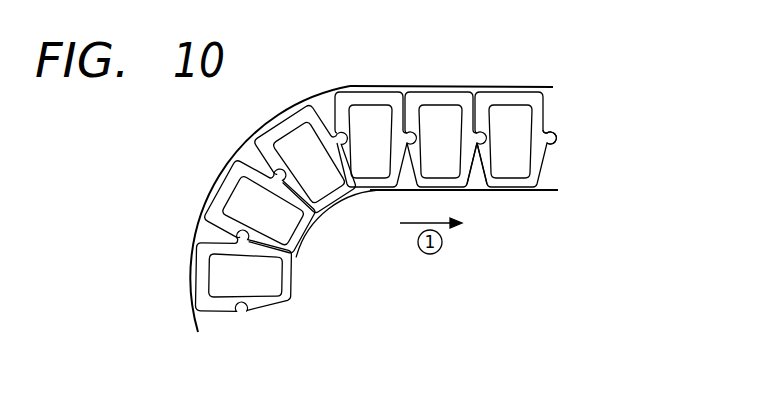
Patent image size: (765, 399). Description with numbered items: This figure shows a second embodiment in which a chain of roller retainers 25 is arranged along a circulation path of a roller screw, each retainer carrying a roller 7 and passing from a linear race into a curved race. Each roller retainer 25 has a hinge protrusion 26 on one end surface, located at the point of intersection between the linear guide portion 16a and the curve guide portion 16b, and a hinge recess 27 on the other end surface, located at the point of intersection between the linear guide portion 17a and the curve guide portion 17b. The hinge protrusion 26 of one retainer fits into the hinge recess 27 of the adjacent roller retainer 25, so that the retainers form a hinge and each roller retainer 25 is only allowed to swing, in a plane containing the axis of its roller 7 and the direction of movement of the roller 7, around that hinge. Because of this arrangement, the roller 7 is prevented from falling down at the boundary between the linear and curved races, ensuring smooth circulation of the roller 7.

The linear guide portion 16a is at (545, 100).
The curve guide portion 16b is at (538, 163).
The roller retainer 25 is at (422, 98).
The roller 7 is at (445, 112).
The hinge recess 27 is at (488, 122).
The hinge protrusion 26 is at (553, 138).
The linear guide portion 17a is at (468, 188).
The curve guide portion 17b is at (486, 188).